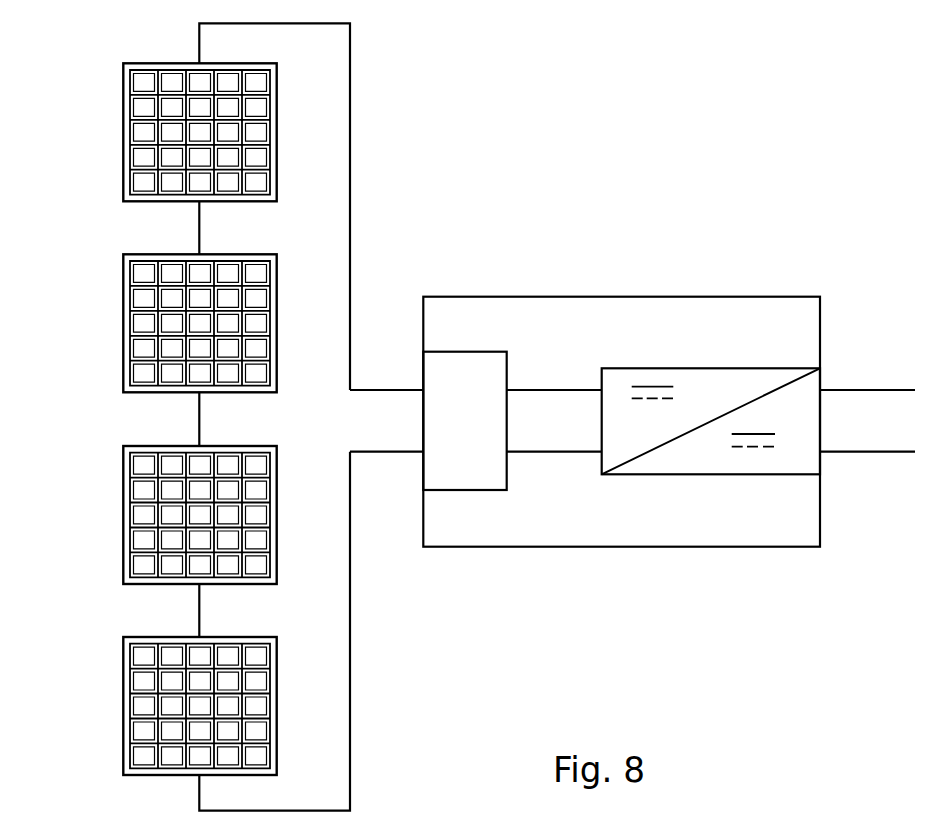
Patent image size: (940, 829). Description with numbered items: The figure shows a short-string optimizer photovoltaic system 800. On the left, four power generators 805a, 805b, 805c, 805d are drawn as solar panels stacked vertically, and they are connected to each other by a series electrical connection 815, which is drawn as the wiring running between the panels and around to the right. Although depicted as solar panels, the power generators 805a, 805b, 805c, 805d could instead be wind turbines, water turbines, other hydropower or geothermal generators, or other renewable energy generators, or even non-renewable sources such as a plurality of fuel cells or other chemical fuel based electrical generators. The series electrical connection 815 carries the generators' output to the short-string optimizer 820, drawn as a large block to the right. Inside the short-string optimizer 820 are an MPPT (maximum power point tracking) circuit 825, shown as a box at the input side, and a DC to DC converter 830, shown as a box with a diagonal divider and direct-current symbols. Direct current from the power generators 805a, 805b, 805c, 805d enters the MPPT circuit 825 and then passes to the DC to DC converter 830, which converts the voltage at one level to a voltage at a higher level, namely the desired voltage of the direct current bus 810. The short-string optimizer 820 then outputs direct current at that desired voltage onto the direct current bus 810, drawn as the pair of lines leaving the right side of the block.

The short-string optimizer system 800 is at (750, 70).
The power generator 805a is at (123, 148).
The power generator 805b is at (123, 338).
The power generator 805c is at (123, 508).
The power generator 805d is at (123, 720).
The direct current bus 810 is at (867, 390).
The series electrical connection 815 is at (235, 226).
The short-string optimizer 820 is at (548, 297).
The MPPT circuit 825 is at (465, 352).
The DC to DC converter 830 is at (672, 368).